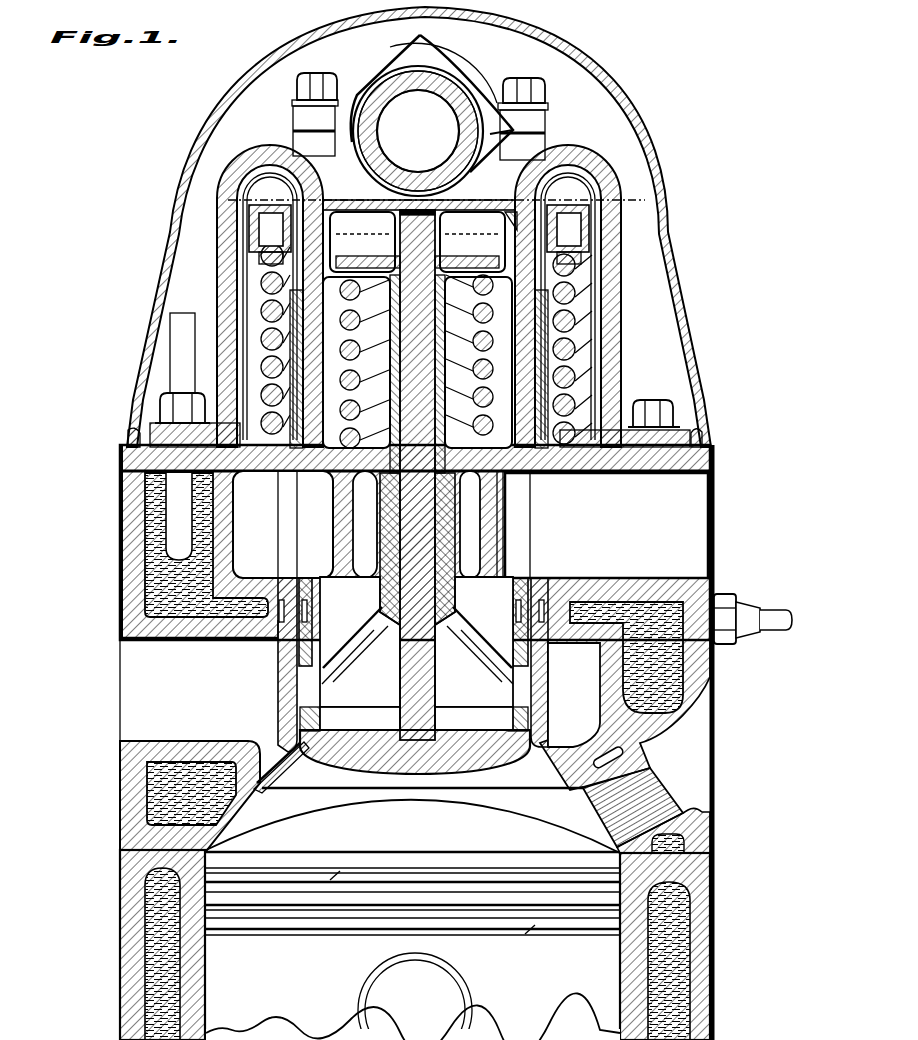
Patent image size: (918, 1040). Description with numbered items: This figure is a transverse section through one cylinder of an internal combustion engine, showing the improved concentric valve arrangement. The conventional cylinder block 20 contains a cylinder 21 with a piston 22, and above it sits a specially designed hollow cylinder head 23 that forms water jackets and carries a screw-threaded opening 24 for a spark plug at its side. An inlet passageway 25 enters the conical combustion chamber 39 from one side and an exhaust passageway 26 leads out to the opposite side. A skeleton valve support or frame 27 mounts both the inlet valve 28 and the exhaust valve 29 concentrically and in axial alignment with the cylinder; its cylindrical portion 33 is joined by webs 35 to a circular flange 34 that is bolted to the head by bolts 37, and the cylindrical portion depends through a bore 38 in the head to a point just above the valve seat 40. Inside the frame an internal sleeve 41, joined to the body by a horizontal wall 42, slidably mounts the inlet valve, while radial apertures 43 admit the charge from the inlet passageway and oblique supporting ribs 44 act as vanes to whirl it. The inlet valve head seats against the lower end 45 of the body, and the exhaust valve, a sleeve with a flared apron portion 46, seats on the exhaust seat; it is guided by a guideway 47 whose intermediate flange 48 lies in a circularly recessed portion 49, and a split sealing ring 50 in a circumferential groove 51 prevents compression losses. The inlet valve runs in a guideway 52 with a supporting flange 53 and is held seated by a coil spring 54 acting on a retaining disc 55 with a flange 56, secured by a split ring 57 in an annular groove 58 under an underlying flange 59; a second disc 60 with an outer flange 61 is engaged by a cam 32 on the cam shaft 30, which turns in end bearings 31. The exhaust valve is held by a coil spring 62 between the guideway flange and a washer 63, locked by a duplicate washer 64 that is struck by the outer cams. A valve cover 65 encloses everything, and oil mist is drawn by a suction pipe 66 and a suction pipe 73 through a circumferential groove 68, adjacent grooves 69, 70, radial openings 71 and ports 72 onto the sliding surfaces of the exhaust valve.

The cylinder block 20 is at (128, 937).
The cylinder 21 is at (412, 920).
The piston 22 is at (435, 996).
The cylinder head 23 is at (126, 528).
The screw-threaded opening 24 is at (653, 771).
The inlet passageway 25 is at (694, 530).
The exhaust passageway 26 is at (135, 690).
The valve support or frame 27 is at (249, 149).
The inlet valve 28 is at (500, 764).
The exhaust valve 29 is at (286, 781).
The cam shaft 30 is at (375, 95).
The end bearings 31 is at (470, 75).
The cams 32 is at (412, 42).
The cylindrical portion 33 is at (367, 662).
The circular flange 34 is at (133, 432).
The webs 35 is at (222, 232).
The bolts 37 is at (651, 400).
The bore 38 is at (572, 563).
The combustion chamber 39 is at (422, 799).
The valve seat 40 is at (262, 742).
The internal sleeve 41 is at (417, 644).
The horizontally disposed wall 42 is at (322, 474).
The radially disposed apertures 43 is at (355, 548).
The supporting ribs 44 is at (352, 605).
The lower end 45 is at (505, 725).
The apron portion 46 is at (357, 783).
The guideway 47 is at (576, 310).
The intermediate flange 48 is at (560, 476).
The circularly recessed portion 49 is at (600, 470).
The sealing ring 50 is at (335, 717).
The circumferential groove 51 is at (500, 700).
The guideway 52 is at (482, 382).
The supporting flange 53 is at (468, 337).
The coil spring 54 is at (352, 308).
The retaining disc 55 is at (368, 251).
The flange 56 is at (467, 251).
The split ring 57 is at (362, 242).
The annular groove 58 is at (472, 242).
The underlying flange 59 is at (417, 475).
The second disc 60 is at (360, 203).
The outer flange 61 is at (507, 206).
The coil spring 62 is at (578, 268).
The washer 63 is at (590, 238).
The duplicate washer 64 is at (574, 203).
The valve cover 65 is at (548, 58).
The suction pipe 66 is at (183, 323).
The circumferential groove 68 is at (592, 597).
The groove 69 is at (286, 590).
The groove 70 is at (318, 580).
The radial openings 71 is at (280, 628).
The ports 72 is at (300, 611).
The suction pipe 73 is at (706, 597).